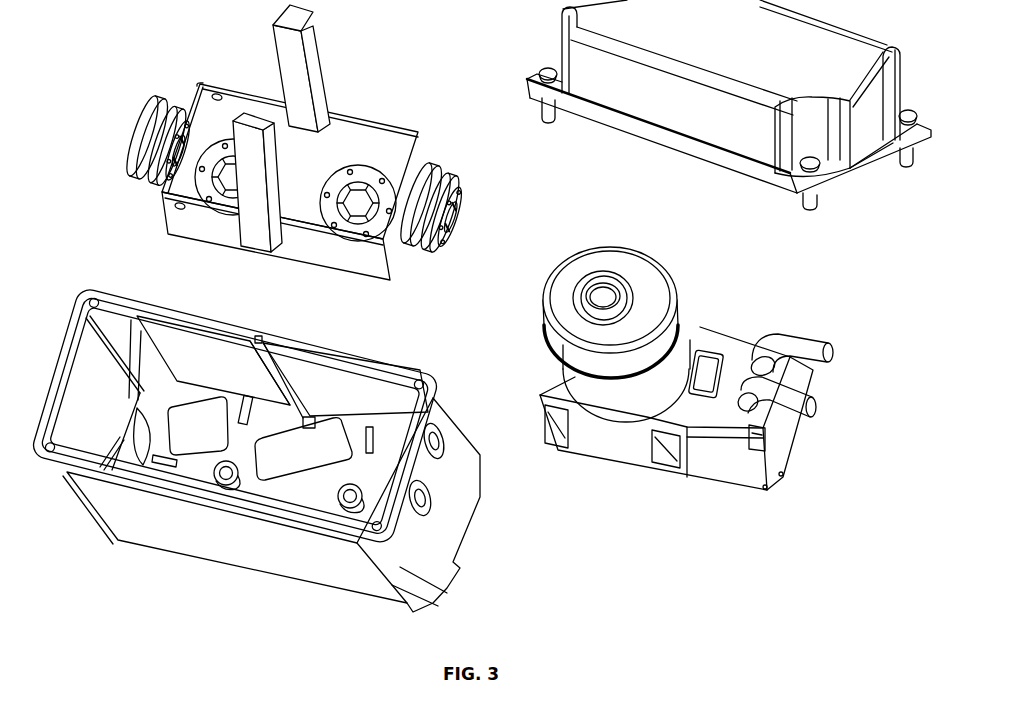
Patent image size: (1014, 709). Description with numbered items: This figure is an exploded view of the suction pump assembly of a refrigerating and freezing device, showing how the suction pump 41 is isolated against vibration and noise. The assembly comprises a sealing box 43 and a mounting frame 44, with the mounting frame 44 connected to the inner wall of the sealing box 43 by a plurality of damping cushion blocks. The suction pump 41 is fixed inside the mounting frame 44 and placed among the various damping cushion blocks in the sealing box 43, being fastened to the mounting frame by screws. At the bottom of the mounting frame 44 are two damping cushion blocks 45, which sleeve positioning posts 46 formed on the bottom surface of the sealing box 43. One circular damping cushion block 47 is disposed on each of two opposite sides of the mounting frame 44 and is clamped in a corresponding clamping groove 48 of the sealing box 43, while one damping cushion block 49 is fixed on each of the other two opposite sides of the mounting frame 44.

The suction pump 41 is at (570, 292).
The sealing box 43 is at (105, 507).
The mounting frame 44 is at (190, 217).
The damping cushion block 45 is at (212, 150).
The positioning post 46 is at (218, 481).
The circular damping cushion block 47 is at (141, 114).
The clamping groove 48 is at (132, 426).
The damping cushion block 49 is at (313, 63).